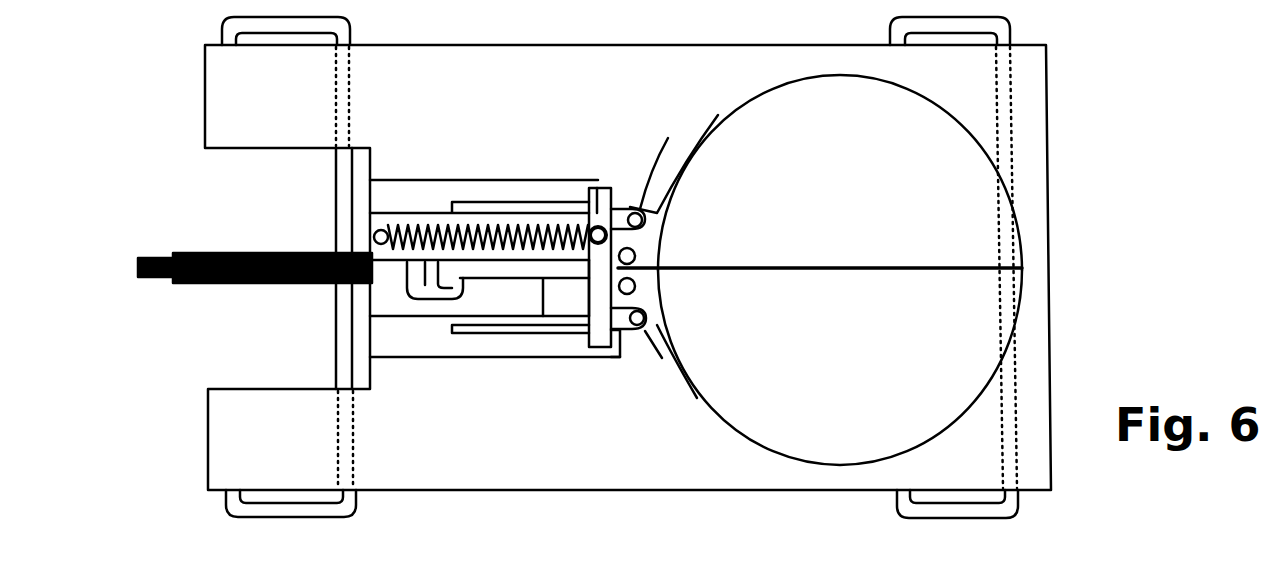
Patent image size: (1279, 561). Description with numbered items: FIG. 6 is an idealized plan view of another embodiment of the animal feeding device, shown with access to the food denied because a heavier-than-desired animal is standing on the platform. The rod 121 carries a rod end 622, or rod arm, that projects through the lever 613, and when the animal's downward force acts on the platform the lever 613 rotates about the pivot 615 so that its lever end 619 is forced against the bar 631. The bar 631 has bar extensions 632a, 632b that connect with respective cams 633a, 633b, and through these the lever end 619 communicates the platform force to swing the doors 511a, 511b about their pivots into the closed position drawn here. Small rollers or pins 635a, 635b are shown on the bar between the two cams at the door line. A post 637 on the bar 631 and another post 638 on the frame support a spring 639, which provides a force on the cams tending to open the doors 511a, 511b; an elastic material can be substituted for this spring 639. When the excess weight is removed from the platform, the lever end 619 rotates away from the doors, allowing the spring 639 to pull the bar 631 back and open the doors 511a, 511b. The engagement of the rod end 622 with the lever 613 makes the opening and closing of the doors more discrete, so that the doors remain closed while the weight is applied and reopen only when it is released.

The rod 121 is at (378, 289).
The door 511a is at (840, 172).
The door 511b is at (820, 366).
The lever 613 is at (458, 268).
The pivot 615 is at (553, 293).
The lever end 619 is at (587, 272).
The rod end 622 is at (385, 262).
The bar 631 is at (598, 182).
The bar extension 632a is at (617, 210).
The bar extension 632b is at (614, 350).
The cam 633a is at (668, 138).
The cam 633b is at (650, 334).
The upper roller 635a is at (652, 251).
The lower roller 635b is at (652, 288).
The post 637 is at (588, 188).
The post 638 is at (375, 232).
The spring 639 is at (428, 215).